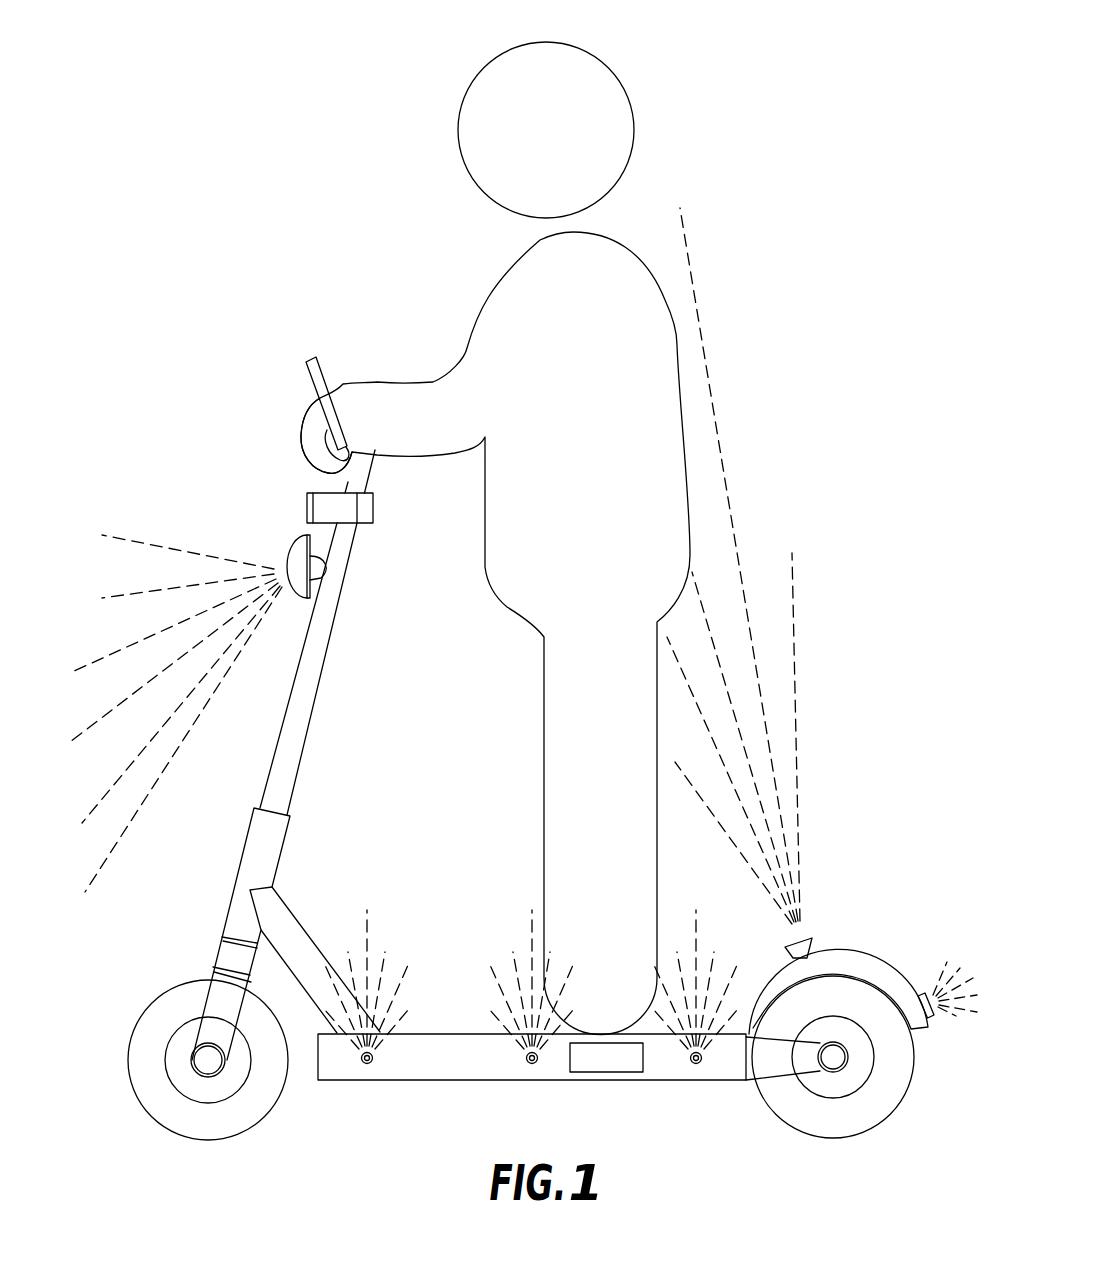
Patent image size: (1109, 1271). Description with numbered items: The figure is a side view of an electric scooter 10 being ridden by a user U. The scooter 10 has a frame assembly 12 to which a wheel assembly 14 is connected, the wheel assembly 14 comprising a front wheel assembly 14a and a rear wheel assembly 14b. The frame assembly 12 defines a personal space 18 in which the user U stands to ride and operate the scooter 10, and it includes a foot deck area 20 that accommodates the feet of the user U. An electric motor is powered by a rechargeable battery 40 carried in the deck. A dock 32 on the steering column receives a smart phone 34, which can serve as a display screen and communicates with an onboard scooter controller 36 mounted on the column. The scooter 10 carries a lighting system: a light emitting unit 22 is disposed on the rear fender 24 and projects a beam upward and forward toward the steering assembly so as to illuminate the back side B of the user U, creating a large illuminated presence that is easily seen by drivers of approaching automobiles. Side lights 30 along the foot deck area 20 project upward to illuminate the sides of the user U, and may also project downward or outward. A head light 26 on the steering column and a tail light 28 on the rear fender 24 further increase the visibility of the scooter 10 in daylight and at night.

The user U is at (622, 82).
The back side of user B is at (677, 335).
The electric scooter 10 is at (178, 465).
The frame assembly 12 is at (243, 857).
The wheel assembly 14 is at (222, 1003).
The front wheel assembly 14a is at (222, 1090).
The rear wheel assembly 14b is at (842, 1083).
The personal space 18 is at (453, 970).
The foot deck area 20 is at (444, 1034).
The light emitting unit 22 is at (812, 947).
The rear fender 24 is at (877, 977).
The head light 26 is at (298, 557).
The tail light 28 is at (932, 1022).
The side lights 30 is at (372, 1080).
The dock 32 is at (302, 420).
The smart phone 34 is at (318, 368).
The onboard scooter controller 36 is at (307, 508).
The rechargeable battery 40 is at (600, 1073).